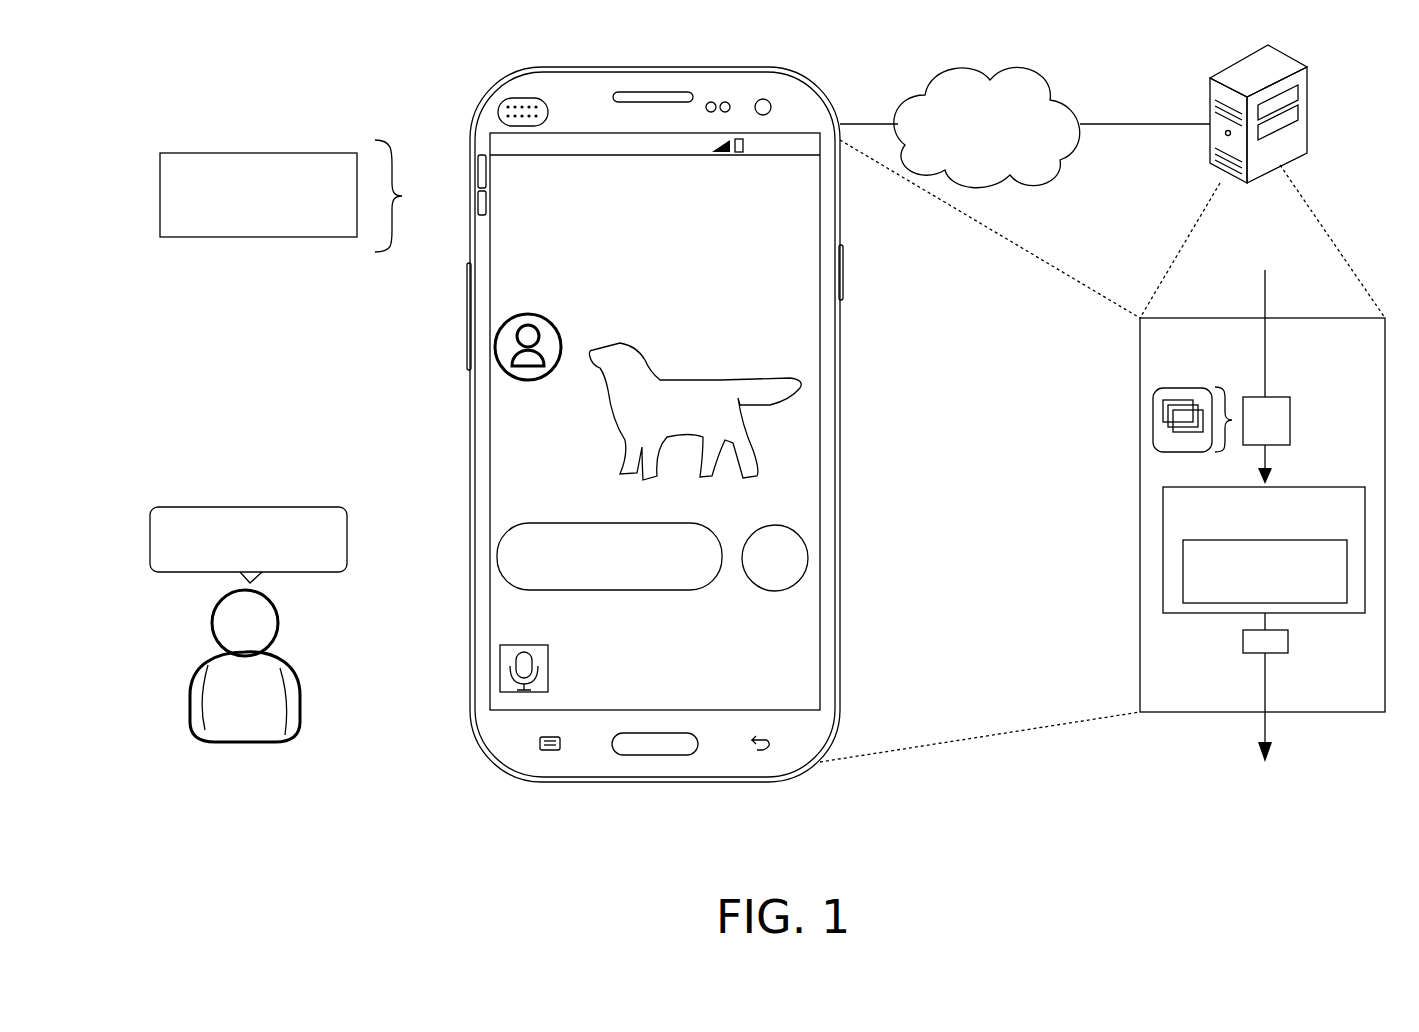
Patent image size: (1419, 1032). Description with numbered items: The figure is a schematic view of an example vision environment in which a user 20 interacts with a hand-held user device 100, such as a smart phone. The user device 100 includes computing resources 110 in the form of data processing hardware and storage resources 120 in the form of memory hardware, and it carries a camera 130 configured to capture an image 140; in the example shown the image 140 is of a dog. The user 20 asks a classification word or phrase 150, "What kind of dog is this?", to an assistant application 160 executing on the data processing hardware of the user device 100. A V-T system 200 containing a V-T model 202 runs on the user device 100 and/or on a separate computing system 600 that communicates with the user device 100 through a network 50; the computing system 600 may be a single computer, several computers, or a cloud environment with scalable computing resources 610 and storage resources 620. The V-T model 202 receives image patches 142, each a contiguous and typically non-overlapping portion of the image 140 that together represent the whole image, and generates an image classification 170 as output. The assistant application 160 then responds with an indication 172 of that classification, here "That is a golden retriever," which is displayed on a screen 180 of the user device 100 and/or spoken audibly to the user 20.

The user 20 is at (266, 742).
The network 50 is at (1025, 127).
The user device 100 is at (605, 68).
The computing resources 110 is at (480, 170).
The storage resources 120 is at (480, 206).
The camera 130 is at (520, 96).
The image 140 is at (683, 337).
The image patches 142 is at (1153, 428).
The classification word or phrase 150 is at (636, 652).
The assistant application 160 is at (281, 196).
The image classification 170 is at (1288, 642).
The indication 172 is at (497, 558).
The screen 180 is at (490, 485).
The V-T system 200 is at (1264, 550).
The V-T model 202 is at (1265, 571).
The computing system 600 is at (1255, 52).
The computing resources 610 is at (1298, 96).
The storage resources 620 is at (1300, 122).